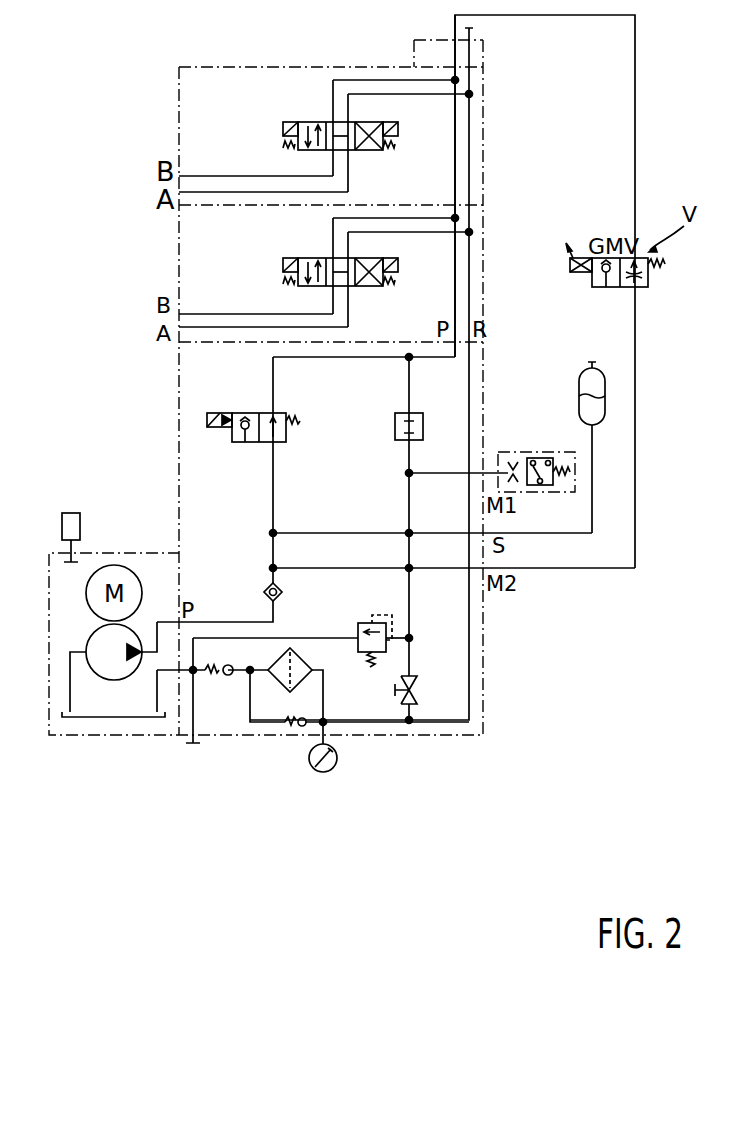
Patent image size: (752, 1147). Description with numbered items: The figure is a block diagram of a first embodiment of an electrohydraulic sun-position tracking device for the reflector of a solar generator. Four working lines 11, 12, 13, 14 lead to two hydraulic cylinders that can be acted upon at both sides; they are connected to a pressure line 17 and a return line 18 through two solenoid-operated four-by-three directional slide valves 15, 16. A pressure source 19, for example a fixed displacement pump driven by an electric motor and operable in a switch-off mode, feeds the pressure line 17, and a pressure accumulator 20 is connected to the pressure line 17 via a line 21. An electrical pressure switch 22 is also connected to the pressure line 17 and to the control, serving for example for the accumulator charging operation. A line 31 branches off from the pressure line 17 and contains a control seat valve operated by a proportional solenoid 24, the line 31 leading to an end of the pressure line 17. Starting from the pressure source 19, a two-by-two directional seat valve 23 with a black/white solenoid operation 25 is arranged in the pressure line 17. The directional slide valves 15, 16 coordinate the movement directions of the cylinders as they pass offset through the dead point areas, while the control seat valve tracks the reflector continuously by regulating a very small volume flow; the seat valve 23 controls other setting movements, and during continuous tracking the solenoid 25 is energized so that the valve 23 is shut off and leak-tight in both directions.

The working line 11 is at (200, 176).
The working line 12 is at (236, 192).
The working line 13 is at (200, 314).
The working line 14 is at (236, 327).
The 4/3 directional slide valve 15 is at (311, 122).
The 4/3 directional slide valve 16 is at (311, 258).
The pressure line 17 is at (457, 140).
The return line 18 is at (471, 170).
The pressure source 19 is at (112, 660).
The pressure accumulator 20 is at (606, 378).
The line 21 is at (533, 535).
The electrical pressure switch 22 is at (565, 493).
The 2/2 directional seat valve 23 is at (252, 432).
The proportional solenoid 24 is at (585, 274).
The black/white solenoid operation 25 is at (220, 413).
The line 31 is at (612, 570).